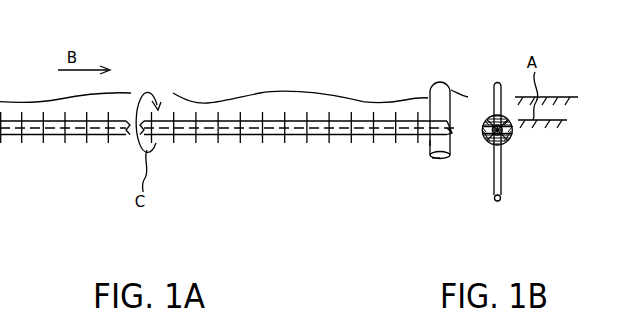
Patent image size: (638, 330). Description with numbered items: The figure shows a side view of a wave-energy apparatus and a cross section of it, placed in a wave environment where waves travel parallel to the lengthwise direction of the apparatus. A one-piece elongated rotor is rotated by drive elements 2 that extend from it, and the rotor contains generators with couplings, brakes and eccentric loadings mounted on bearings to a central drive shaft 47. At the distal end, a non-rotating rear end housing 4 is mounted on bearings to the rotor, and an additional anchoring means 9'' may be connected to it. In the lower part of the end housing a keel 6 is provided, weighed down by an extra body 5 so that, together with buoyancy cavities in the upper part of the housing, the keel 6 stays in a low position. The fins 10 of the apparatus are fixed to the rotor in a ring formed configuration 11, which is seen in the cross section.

In FIG. 1A, the drive elements 2 is at (173, 113).
In FIG. 1A, the central drive shaft 47 is at (315, 128).
In FIG. 1A, the rear end housing 4 is at (429, 115).
In FIG. 1A, the extra body 5 is at (435, 159).
In FIG. 1B, the extra body 5 is at (497, 203).
In FIG. 1A, the keel 6 is at (430, 143).
In FIG. 1A, the additional anchoring means 9'' is at (466, 155).
In FIG. 1B, the fins 10 is at (490, 117).
In FIG. 1B, the ring formed configuration 11 is at (504, 141).